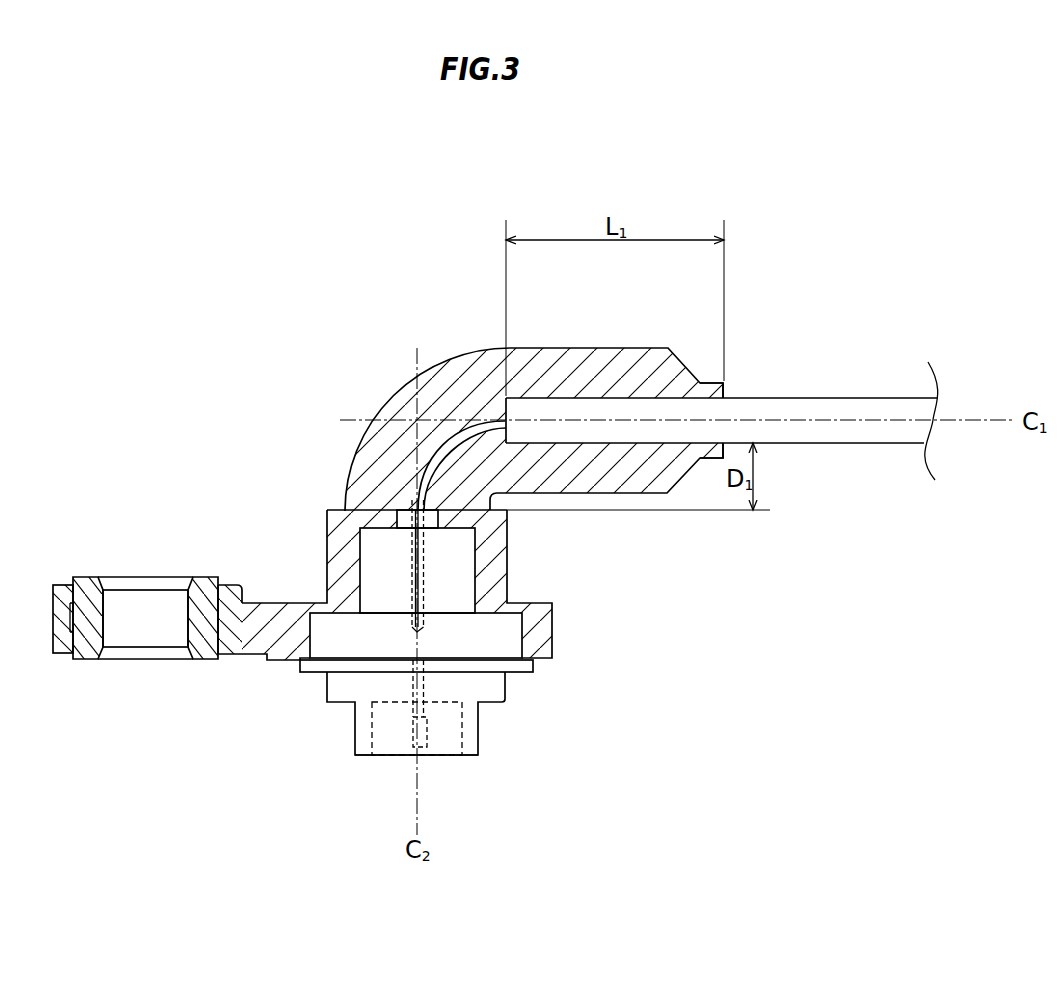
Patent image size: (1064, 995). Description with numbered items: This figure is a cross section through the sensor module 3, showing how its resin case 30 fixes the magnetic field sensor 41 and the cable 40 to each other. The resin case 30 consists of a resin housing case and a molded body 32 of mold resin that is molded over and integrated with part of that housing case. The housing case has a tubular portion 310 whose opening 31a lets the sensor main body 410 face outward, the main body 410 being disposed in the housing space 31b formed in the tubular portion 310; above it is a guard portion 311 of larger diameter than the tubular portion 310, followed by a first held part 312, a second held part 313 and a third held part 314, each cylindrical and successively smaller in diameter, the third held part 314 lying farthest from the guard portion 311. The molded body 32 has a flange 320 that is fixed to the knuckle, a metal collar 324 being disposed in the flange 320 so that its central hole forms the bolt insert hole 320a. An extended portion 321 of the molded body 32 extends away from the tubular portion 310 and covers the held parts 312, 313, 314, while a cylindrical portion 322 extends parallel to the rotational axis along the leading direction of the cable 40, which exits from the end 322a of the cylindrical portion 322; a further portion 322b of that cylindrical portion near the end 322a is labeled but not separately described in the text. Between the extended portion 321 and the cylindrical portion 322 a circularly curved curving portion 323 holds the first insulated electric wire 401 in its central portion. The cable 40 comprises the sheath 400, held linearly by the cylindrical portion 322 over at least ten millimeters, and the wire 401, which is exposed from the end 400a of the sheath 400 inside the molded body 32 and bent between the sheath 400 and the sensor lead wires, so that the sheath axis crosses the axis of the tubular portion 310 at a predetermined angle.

The sensor module 3 is at (218, 295).
The resin case 30 is at (300, 342).
The molded body 32 is at (362, 402).
The flange 320 is at (262, 592).
The bolt insert hole 320a is at (103, 607).
The collar 324 is at (88, 593).
The extended portion 321 is at (327, 533).
The cylindrical portion 322 is at (630, 350).
The end of the cylindrical portion 322a is at (728, 380).
The arm step lower surface 322b is at (725, 392).
The curving portion 323 is at (452, 426).
The third held part 314 is at (400, 523).
The second held part 313 is at (462, 558).
The first held part 312 is at (487, 622).
The guard portion 311 is at (522, 667).
The tubular portion 310 is at (470, 715).
The opening 31a is at (447, 760).
The housing space 31b is at (390, 740).
The magnetic field sensor 41 is at (413, 760).
The sensor main body 410 is at (423, 750).
The cable 40 is at (830, 440).
The sheath 400 is at (588, 395).
The end of the sheath 400a is at (502, 393).
The first insulated electric wire 401 is at (458, 422).